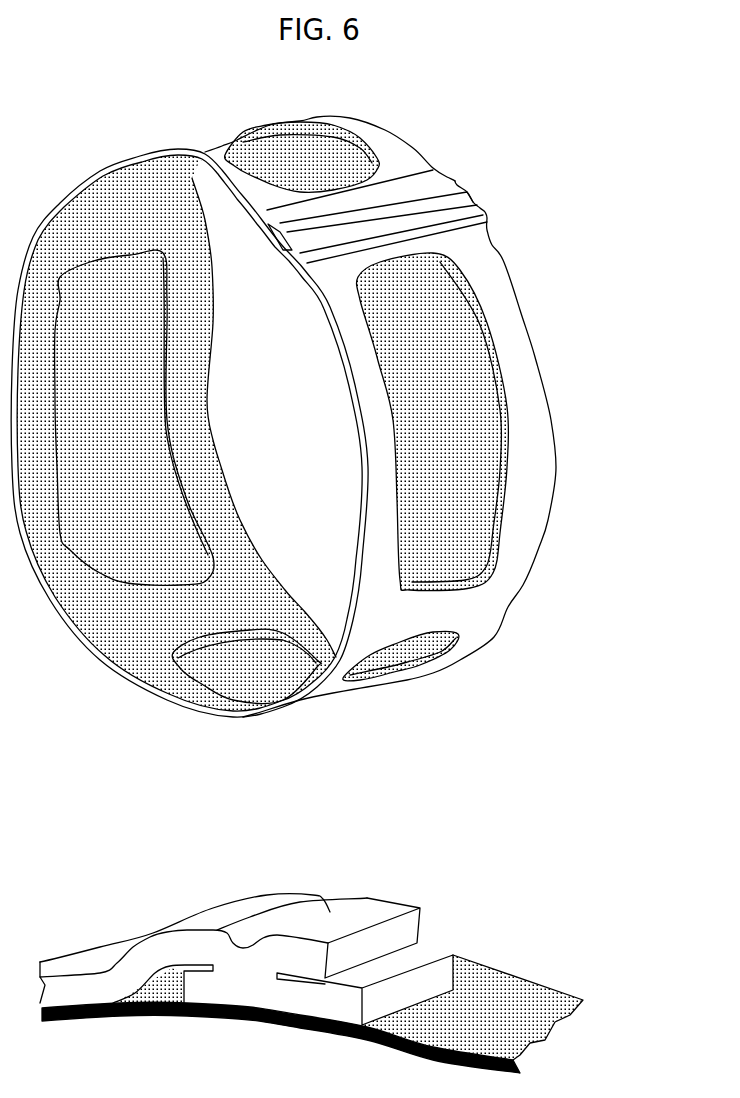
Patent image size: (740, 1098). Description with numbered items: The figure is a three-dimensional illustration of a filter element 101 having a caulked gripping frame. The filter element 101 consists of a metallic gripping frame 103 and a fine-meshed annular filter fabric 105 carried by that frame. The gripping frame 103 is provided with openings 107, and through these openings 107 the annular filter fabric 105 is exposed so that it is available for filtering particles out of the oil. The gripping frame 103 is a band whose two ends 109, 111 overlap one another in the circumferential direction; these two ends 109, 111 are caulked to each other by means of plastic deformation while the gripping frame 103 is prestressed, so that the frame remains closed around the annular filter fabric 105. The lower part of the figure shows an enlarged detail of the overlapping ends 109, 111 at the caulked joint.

The wearable band device 101 is at (312, 584).
The band body 103 is at (478, 604).
The opening 105 is at (470, 362).
The opening inner wall 107 is at (482, 452).
The hook / strap end 109 is at (297, 257).
The clasp block 111 is at (278, 233).